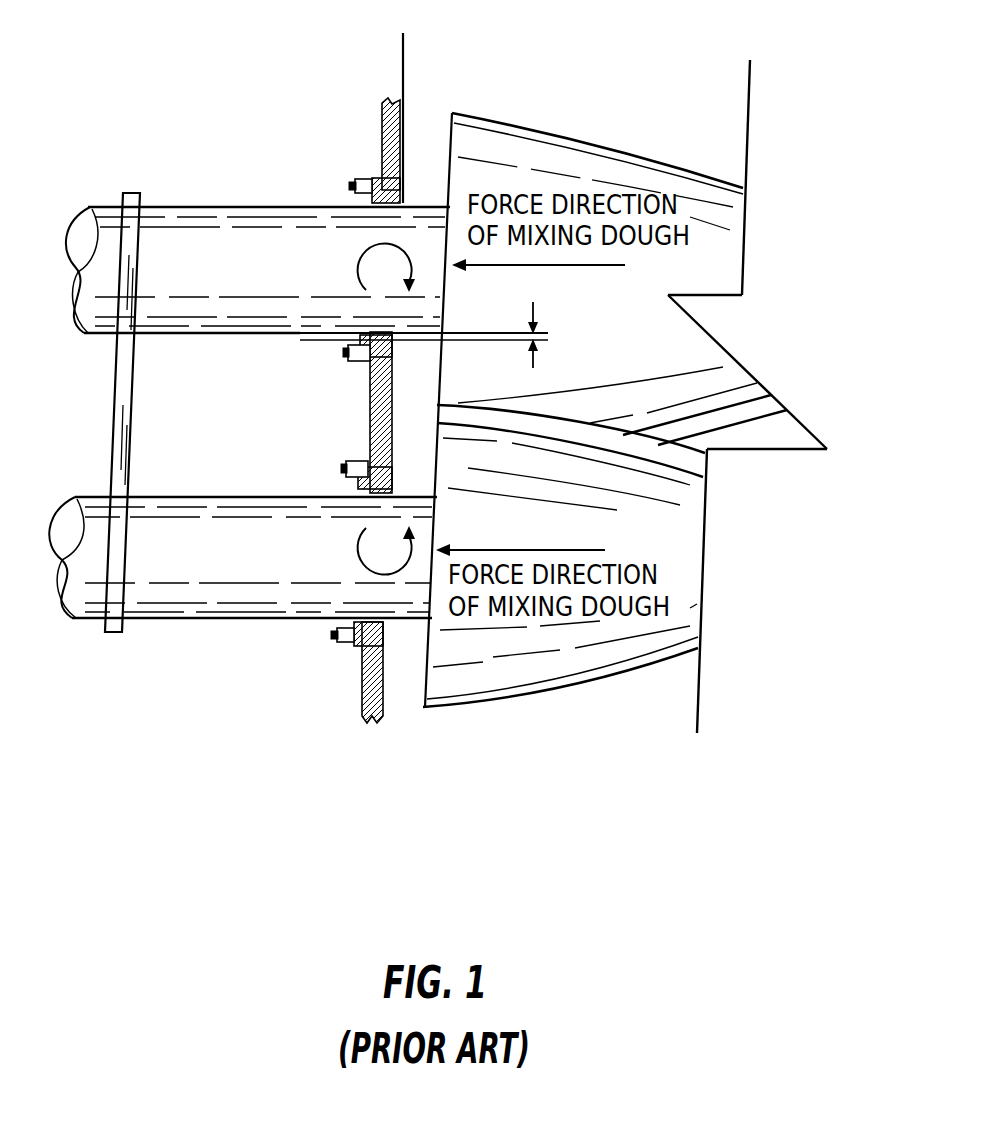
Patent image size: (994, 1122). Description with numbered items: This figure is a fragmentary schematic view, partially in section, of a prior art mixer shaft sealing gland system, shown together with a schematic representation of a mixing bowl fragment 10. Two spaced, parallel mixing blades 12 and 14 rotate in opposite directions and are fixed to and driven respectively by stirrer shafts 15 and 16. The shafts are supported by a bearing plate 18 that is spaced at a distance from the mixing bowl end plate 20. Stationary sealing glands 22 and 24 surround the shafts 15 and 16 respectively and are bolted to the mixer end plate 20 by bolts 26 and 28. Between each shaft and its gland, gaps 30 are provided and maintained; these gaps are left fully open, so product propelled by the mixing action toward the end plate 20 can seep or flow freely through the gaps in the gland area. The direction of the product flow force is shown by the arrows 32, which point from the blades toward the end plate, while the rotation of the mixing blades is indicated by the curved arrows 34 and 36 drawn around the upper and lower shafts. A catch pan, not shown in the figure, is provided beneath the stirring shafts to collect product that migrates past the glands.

The mixing bowl fragment 10 is at (580, 80).
The mixing blade 12 is at (506, 125).
The mixing blade 14 is at (530, 680).
The stirrer shaft 15 is at (204, 270).
The stirrer shaft 16 is at (167, 568).
The bearing plate 18 is at (118, 412).
The mixing bowl end plate 20 is at (383, 130).
The sealing gland 22 is at (372, 196).
The sealing gland 24 is at (362, 478).
The bolt 26 is at (368, 178).
The bolt 28 is at (363, 465).
The gap 30 is at (408, 655).
The product flow force arrow 32 is at (546, 408).
The mixing blade rotation arrow 34 is at (356, 276).
The mixing blade rotation arrow 36 is at (356, 556).